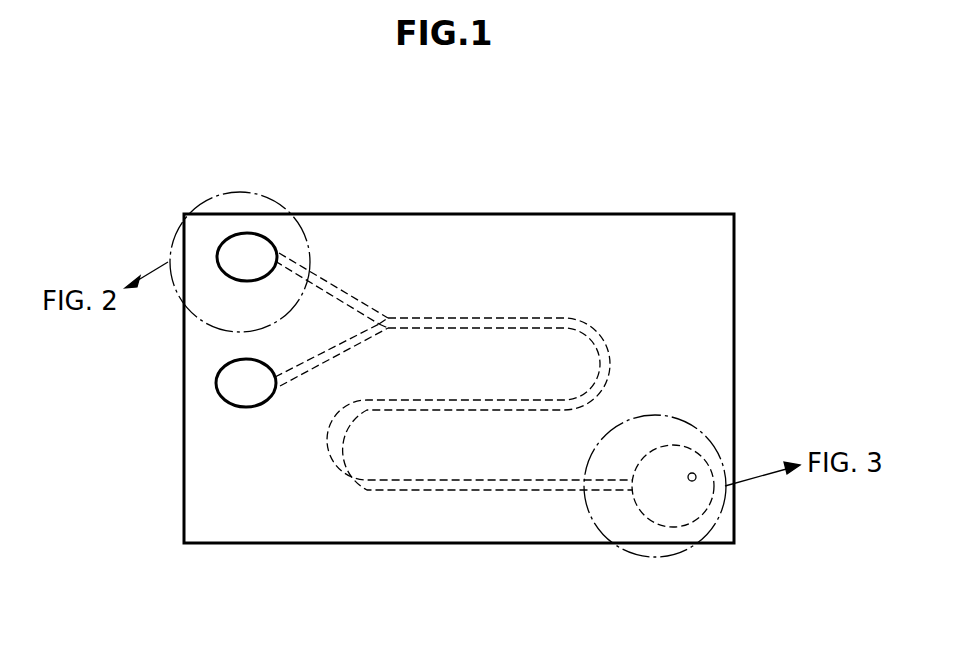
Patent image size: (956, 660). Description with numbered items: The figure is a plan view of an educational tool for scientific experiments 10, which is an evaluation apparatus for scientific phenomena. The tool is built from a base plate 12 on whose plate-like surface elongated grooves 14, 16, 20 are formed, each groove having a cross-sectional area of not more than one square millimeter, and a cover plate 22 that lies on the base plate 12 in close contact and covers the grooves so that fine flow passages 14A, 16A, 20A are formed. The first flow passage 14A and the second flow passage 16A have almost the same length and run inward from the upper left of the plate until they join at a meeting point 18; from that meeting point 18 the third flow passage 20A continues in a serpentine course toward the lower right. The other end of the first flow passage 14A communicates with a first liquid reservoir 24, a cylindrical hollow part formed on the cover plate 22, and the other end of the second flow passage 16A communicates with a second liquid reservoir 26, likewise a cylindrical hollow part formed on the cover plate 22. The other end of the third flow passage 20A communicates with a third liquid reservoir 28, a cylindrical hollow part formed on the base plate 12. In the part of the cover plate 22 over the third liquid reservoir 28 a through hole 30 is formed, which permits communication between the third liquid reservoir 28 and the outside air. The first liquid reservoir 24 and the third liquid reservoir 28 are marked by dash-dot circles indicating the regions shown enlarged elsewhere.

The educational tool for scientific experiments 10 is at (524, 306).
The base plate 12 is at (524, 378).
The cover plate 22 is at (735, 285).
The long groove 14 is at (375, 276).
The first flow passage 14A is at (332, 288).
The long groove 16 is at (331, 432).
The second flow passage 16A is at (298, 378).
The meeting point 18 is at (388, 318).
The long groove 20 is at (488, 375).
The third flow passage 20A is at (532, 318).
The first liquid reservoir 24 is at (266, 250).
The second liquid reservoir 26 is at (233, 407).
The third liquid reservoir 28 is at (704, 497).
The through hole 30 is at (692, 473).